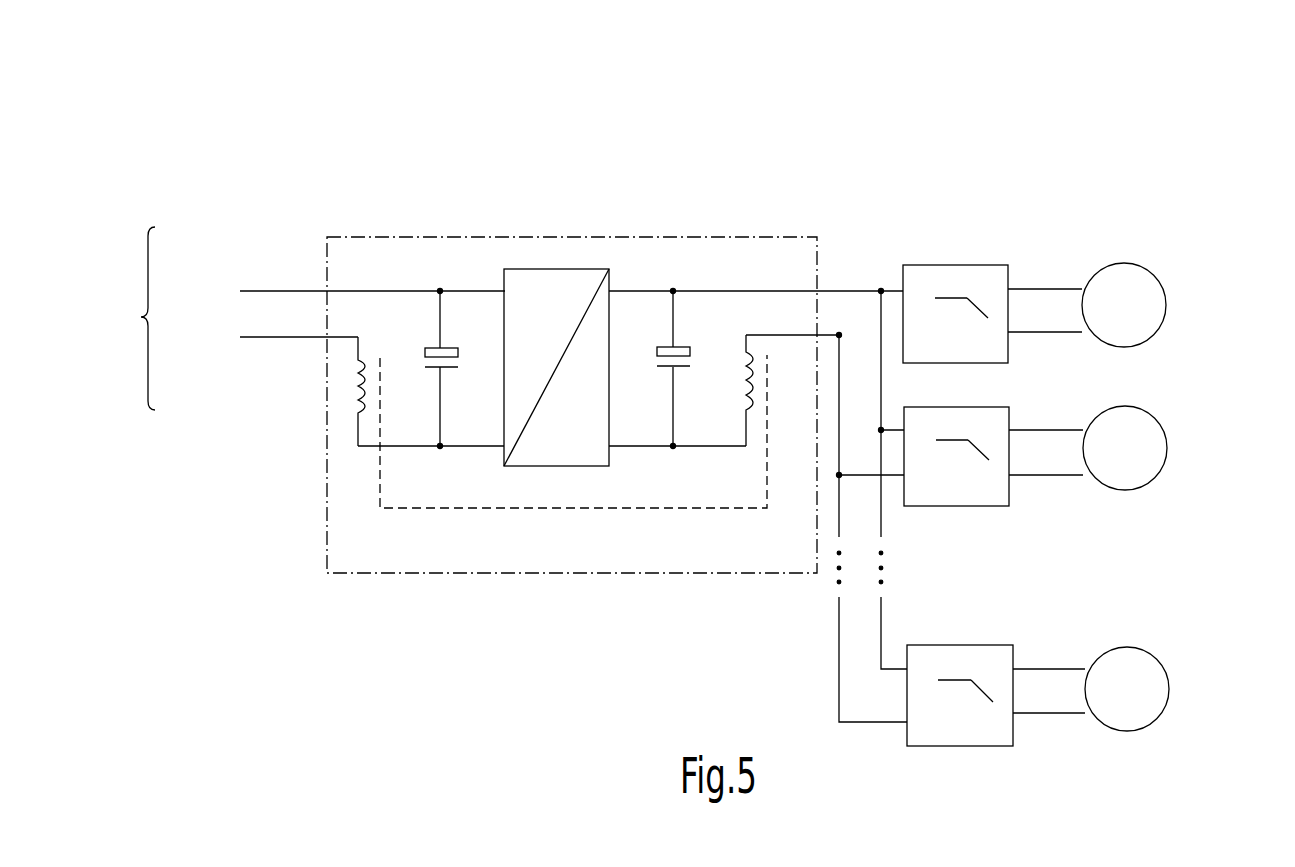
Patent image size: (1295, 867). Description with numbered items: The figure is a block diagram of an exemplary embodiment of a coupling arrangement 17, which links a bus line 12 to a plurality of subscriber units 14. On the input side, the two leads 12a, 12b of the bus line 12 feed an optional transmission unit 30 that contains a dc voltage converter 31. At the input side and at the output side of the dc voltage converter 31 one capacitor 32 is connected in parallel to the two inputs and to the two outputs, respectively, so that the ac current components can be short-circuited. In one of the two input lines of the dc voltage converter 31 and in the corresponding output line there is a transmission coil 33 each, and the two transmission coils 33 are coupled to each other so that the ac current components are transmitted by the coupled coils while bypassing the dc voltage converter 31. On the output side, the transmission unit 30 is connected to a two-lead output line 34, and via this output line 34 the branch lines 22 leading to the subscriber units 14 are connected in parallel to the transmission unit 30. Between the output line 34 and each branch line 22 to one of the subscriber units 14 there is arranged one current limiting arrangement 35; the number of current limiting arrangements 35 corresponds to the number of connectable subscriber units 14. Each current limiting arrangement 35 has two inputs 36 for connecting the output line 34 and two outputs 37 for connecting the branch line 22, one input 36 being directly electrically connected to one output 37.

The bus line 12 is at (130, 318).
The lead of the bus line 12a is at (253, 291).
The lead of the bus line 12b is at (253, 337).
The subscriber unit 14 is at (1145, 290).
The coupling arrangement 17 is at (1043, 125).
The branch line 22 is at (1045, 268).
The transmission unit 30 is at (641, 228).
The dc voltage converter 31 is at (537, 269).
The capacitor 32 is at (440, 348).
The transmission coil 33 is at (355, 400).
The two-lead output line 34 is at (850, 265).
The current limiting arrangement 35 is at (1000, 358).
The input of the current limiting arrangement 36 is at (912, 298).
The output of the current limiting arrangement 37 is at (1000, 300).